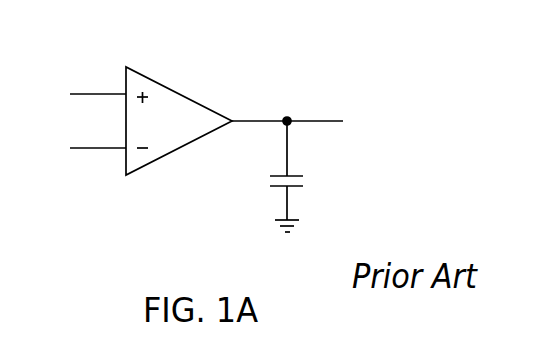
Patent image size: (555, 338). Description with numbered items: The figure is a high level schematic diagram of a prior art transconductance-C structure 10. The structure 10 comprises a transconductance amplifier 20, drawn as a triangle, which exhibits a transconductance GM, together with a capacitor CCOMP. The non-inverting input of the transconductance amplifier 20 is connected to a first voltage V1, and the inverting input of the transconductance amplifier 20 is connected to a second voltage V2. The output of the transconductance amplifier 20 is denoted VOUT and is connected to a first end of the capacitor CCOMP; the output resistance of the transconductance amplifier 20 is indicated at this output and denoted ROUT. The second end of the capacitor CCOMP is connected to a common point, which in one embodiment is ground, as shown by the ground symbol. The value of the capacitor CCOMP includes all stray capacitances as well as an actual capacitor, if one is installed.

The transconductance-C structure 10 is at (418, 38).
The transconductance amplifier 20 is at (192, 147).
The transconductance GM is at (179, 121).
The first voltage V1 is at (78, 94).
The second voltage V2 is at (78, 148).
The output VOUT is at (325, 122).
The output resistance ROUT is at (271, 82).
The capacitor CCOMP is at (336, 176).